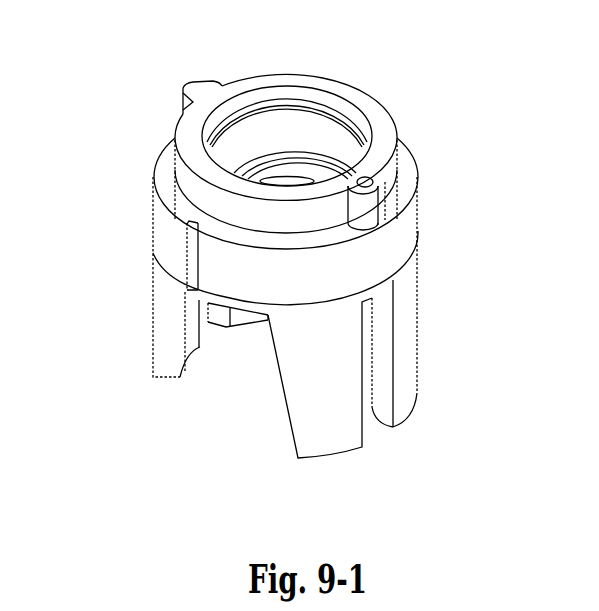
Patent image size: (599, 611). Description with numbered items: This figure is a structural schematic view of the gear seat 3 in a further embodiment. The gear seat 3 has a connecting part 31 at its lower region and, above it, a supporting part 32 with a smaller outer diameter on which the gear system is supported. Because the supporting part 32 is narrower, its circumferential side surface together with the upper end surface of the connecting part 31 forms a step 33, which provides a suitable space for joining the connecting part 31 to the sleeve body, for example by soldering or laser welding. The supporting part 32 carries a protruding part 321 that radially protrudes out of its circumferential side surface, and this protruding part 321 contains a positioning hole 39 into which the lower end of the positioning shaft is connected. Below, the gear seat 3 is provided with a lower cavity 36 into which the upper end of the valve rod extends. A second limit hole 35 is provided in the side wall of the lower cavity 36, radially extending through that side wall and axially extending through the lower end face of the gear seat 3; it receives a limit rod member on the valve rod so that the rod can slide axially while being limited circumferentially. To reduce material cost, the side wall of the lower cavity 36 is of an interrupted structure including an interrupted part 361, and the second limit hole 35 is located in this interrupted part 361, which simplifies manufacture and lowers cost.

The gear seat 3 is at (140, 170).
The connecting part 31 is at (415, 207).
The supporting part 32 is at (370, 108).
The step 33 is at (410, 165).
The second limit hole 35 is at (383, 335).
The lower cavity 36 is at (240, 365).
The positioning hole 39 is at (371, 186).
The protruding part 321 is at (436, 247).
The interrupted part 361 is at (328, 367).